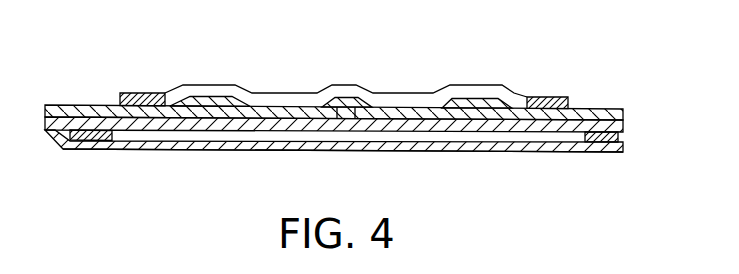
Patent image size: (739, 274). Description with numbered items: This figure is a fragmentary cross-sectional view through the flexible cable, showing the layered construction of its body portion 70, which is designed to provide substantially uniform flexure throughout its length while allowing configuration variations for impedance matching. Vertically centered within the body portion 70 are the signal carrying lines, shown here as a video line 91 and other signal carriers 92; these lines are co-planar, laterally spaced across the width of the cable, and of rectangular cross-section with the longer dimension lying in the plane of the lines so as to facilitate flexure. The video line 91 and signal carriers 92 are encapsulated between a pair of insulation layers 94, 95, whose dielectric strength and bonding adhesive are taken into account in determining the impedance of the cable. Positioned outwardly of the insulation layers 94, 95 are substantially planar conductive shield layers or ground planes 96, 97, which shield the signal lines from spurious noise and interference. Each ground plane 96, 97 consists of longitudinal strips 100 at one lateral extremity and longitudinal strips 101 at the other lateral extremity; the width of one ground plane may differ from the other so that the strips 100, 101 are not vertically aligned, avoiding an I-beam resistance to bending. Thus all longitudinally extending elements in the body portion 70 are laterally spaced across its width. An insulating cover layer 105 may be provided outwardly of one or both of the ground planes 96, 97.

The body portion 70 is at (370, 116).
The video line 91 is at (347, 110).
The other signal carriers 92 is at (210, 102).
The insulation layer 94 is at (623, 115).
The insulation layer 95 is at (625, 128).
The ground plane 96 is at (507, 91).
The ground plane 97 is at (515, 141).
The longitudinal strips 100 is at (138, 93).
The longitudinal strips 101 is at (553, 97).
The insulating cover layer 105 is at (380, 152).